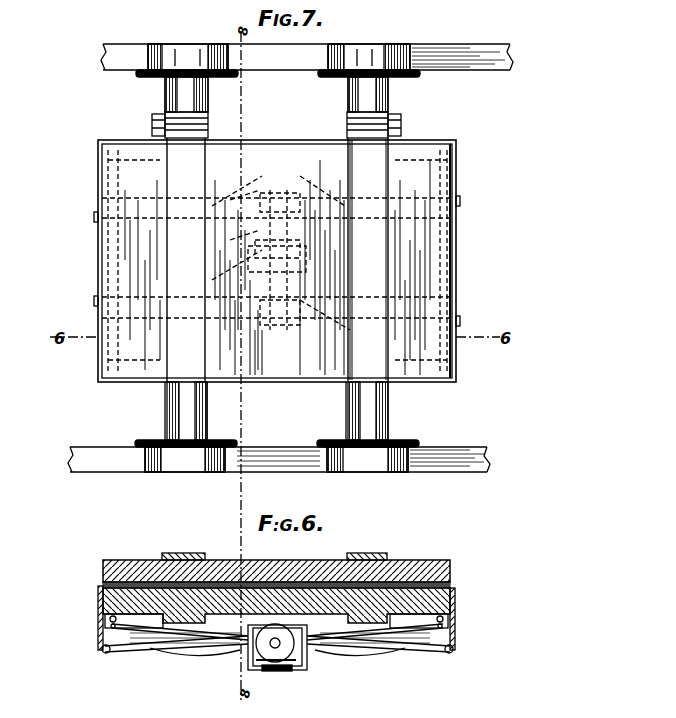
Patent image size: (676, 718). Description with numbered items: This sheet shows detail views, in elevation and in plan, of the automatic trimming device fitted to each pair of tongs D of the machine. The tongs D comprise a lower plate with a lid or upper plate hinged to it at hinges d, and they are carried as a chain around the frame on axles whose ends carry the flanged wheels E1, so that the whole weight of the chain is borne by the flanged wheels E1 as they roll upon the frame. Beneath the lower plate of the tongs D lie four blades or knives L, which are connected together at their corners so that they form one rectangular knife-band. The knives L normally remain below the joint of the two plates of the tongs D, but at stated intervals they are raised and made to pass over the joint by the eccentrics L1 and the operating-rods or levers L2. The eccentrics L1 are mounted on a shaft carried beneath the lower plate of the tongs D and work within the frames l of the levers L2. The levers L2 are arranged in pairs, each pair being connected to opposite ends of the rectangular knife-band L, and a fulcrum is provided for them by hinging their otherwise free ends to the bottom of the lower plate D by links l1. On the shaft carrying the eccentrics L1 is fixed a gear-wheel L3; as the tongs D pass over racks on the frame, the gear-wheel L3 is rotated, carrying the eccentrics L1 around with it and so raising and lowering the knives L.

In FIG. 7, the blades or knives L is at (97, 205).
In FIG. 6, the blades or knives L is at (100, 605).
In FIG. 7, the eccentrics L1 is at (300, 228).
In FIG. 6, the eccentrics L1 is at (285, 662).
In FIG. 7, the operating-rods or levers L2 is at (228, 215).
In FIG. 6, the operating-rods or levers L2 is at (168, 642).
In FIG. 7, the gear-wheel L3 is at (328, 270).
In FIG. 7, the flanged wheels E1 is at (368, 60).
In FIG. 7, the hinges d is at (165, 118).
In FIG. 6, the tongs or plates D is at (455, 605).
In FIG. 6, the frames l is at (252, 655).
In FIG. 6, the links l1 is at (108, 618).